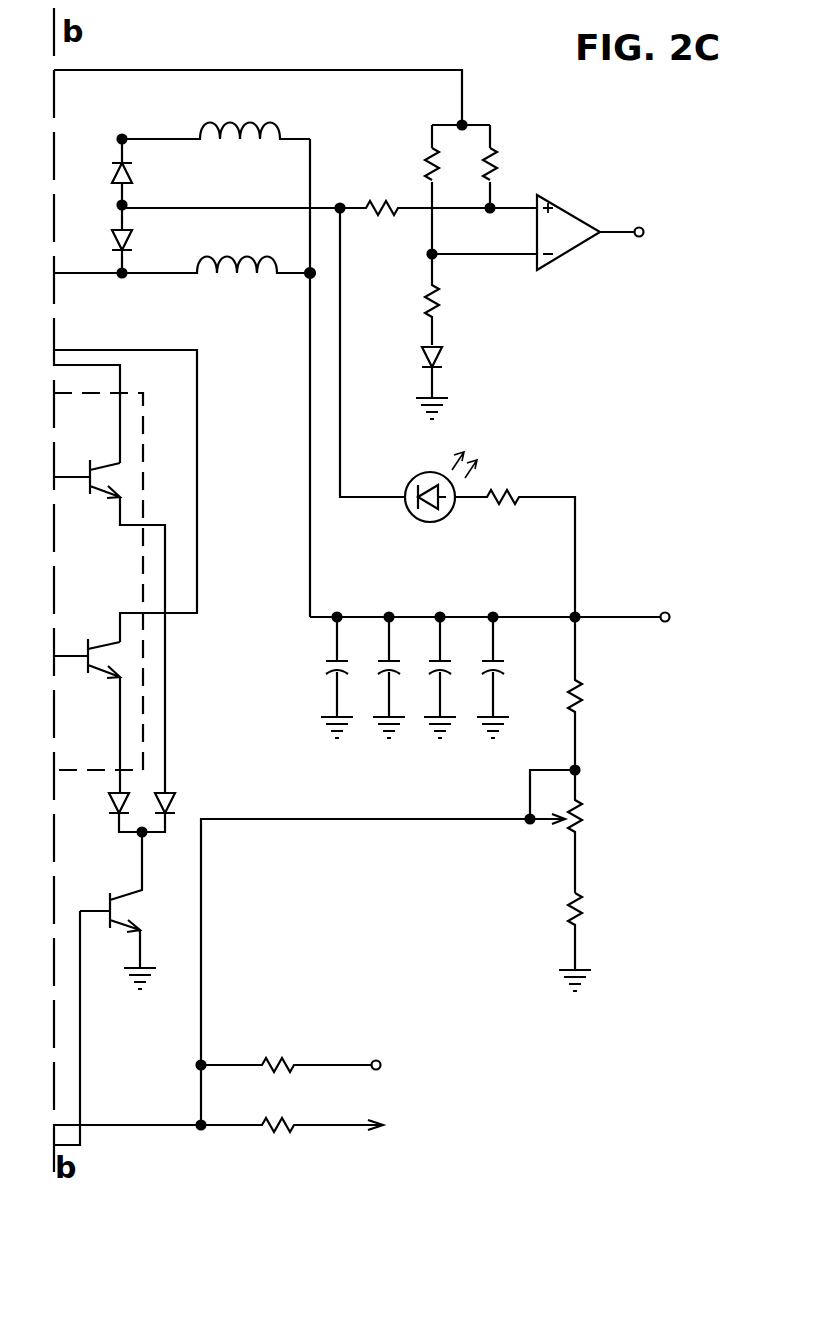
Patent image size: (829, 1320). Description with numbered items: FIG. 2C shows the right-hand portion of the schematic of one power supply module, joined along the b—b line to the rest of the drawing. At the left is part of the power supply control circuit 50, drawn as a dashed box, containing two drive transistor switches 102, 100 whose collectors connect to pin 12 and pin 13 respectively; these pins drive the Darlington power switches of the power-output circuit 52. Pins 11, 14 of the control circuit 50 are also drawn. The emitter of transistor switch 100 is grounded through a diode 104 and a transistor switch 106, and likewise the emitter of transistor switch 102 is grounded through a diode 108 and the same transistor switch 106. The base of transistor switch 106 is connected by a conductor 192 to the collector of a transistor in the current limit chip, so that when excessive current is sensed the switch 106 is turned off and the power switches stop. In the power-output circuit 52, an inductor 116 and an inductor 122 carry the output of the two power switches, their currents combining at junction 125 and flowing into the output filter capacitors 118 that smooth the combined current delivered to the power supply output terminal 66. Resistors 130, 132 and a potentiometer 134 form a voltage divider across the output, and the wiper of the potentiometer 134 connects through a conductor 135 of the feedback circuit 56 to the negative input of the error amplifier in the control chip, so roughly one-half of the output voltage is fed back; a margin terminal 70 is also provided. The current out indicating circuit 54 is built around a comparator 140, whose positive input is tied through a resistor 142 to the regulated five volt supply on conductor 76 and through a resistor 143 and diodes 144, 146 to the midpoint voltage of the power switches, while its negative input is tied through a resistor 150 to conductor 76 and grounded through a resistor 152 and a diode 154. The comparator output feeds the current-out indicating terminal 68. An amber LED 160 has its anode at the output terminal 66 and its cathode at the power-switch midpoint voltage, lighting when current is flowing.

The power-output circuit 52 is at (142, 50).
The conductor 76 is at (345, 70).
The current out indicating circuit 54 is at (514, 110).
The resistor 150 is at (428, 160).
The resistor 142 is at (494, 160).
The inductor 122 is at (235, 135).
The diode 144 is at (135, 172).
The diode 146 is at (135, 237).
The inductor 116 is at (220, 288).
The junction 125 is at (307, 280).
The resistor 143 is at (385, 202).
The comparator 140 is at (565, 210).
The current-out indicating terminal 68 is at (643, 228).
The resistor 152 is at (440, 298).
The diode 154 is at (440, 356).
The amber LED 160 is at (412, 480).
The power supply output terminal 66 is at (664, 612).
The capacitors 118 is at (383, 648).
The resistor 130 is at (585, 684).
The potentiometer 134 is at (585, 802).
The resistor 132 is at (585, 896).
The conductor 135 is at (412, 818).
The margin terminal 70 is at (375, 1060).
The feedback circuit 56 is at (250, 903).
The conductor 192 is at (82, 1060).
The power supply control circuit 50 is at (143, 472).
The pin 12 is at (88, 414).
The pin 13 is at (125, 496).
The terminal lead 11 is at (142, 645).
The terminal lead 14 is at (107, 735).
The transistor switch 102 is at (90, 464).
The transistor switch 100 is at (88, 642).
The diode 104 is at (110, 800).
The diode 108 is at (172, 800).
The transistor switch 106 is at (108, 894).